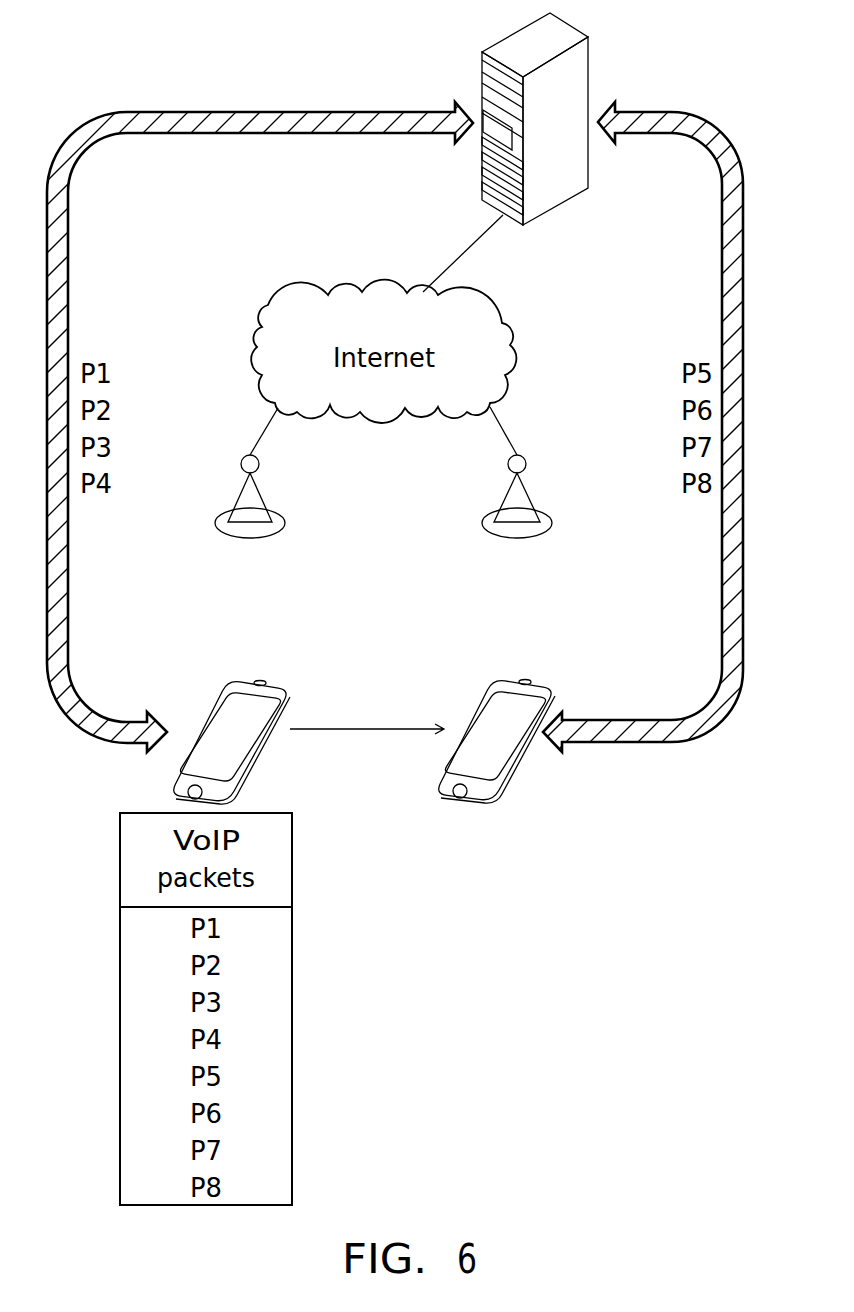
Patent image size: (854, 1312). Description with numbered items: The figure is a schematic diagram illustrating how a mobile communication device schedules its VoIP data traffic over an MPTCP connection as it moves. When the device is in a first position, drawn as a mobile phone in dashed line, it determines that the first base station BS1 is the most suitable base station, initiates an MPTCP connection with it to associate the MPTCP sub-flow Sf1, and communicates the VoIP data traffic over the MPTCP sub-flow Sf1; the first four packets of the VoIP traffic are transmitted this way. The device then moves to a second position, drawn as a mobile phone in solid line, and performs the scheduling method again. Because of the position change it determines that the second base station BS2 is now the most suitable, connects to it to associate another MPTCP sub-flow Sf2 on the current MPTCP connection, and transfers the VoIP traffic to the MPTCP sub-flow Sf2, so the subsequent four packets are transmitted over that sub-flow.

The MPTCP sub-flow Sf1 is at (427, 656).
The MPTCP sub-flow Sf2 is at (427, 656).
The first base station BS1 is at (250, 497).
The second base station BS2 is at (517, 496).